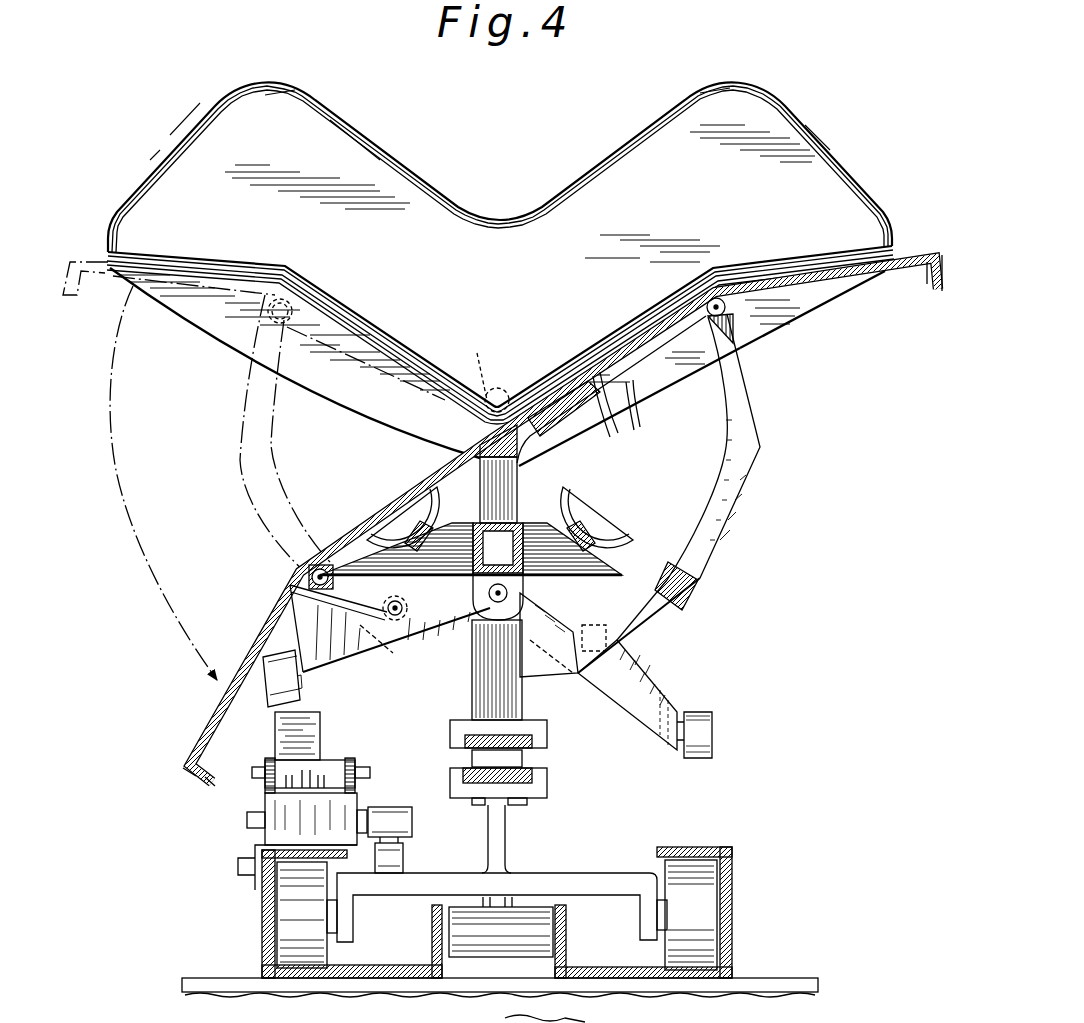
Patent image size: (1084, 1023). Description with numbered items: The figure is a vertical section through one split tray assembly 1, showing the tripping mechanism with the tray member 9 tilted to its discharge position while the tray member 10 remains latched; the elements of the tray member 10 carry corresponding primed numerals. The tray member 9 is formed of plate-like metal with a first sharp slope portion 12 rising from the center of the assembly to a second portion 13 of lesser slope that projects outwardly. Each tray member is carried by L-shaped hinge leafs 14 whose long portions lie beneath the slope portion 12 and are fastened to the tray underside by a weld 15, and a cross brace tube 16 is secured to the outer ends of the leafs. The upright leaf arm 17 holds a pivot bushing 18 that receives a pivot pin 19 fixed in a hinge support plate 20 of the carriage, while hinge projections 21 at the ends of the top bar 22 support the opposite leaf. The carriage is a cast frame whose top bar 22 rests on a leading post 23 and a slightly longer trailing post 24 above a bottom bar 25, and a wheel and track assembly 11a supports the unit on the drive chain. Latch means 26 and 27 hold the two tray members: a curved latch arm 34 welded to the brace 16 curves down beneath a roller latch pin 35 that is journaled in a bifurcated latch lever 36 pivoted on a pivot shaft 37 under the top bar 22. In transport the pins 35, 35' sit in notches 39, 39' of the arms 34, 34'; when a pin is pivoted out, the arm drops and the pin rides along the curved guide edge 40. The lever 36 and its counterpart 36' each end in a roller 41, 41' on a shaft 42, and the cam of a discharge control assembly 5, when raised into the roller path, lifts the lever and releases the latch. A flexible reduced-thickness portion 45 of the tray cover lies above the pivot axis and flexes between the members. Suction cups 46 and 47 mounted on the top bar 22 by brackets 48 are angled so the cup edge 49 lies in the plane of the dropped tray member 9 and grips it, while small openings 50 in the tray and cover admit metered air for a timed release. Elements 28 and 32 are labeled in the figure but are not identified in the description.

The tray assembly 1 is at (444, 153).
The seat body 28 is at (601, 248).
The tray member 10 is at (640, 323).
The guide edge 40 is at (802, 272).
The tray member 9 is at (331, 543).
The latch means 26 is at (313, 643).
The second portion 13 is at (833, 278).
The hinge leafs 14 is at (637, 400).
The slope portion 12 is at (650, 353).
The cross brace tube 16 is at (727, 316).
The weld 15 is at (706, 300).
The leaf arm 17 is at (537, 460).
The reduced-thickness portion 45 is at (564, 408).
The pivot bushing 18 is at (502, 398).
The pivot pin 19 is at (478, 361).
The pivot 32 is at (393, 350).
The hinge support plate 20 is at (507, 490).
The top bar 22 is at (510, 522).
The pivot shaft 37 is at (468, 604).
The brackets 48 is at (557, 572).
The latch arm 34 is at (471, 636).
The suction cup 47 is at (590, 515).
The cup edge 49 is at (627, 524).
The small openings 50 is at (393, 498).
The suction cup 46 is at (378, 501).
The latch arm 34' is at (686, 574).
The notch 39 is at (676, 613).
The latch pin 35' is at (577, 626).
The notch 39' is at (594, 680).
The latch lever 36' is at (628, 714).
The latch means 27 is at (652, 672).
The roller 41' is at (728, 730).
The roller latch pin 35 is at (390, 628).
The latch lever 36 is at (393, 655).
The roller 41 is at (261, 693).
The cam 42 is at (320, 720).
The discharge control assembly 5 is at (369, 752).
The leading post 23 is at (473, 695).
The bottom bar 25 is at (547, 742).
The wheel and track assembly 11a is at (622, 869).
The trailing post 24 is at (128, 1022).
The hinge projections 21 is at (500, 1008).